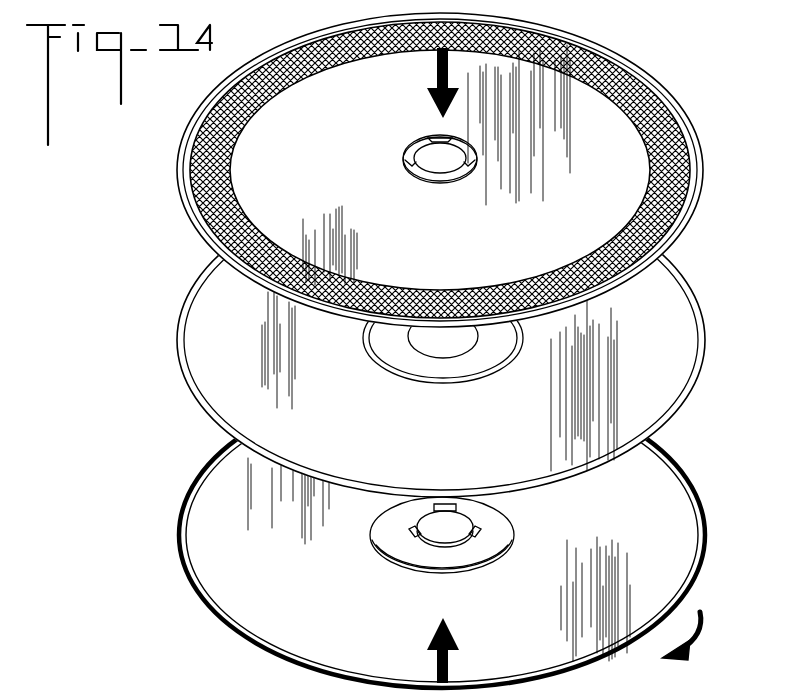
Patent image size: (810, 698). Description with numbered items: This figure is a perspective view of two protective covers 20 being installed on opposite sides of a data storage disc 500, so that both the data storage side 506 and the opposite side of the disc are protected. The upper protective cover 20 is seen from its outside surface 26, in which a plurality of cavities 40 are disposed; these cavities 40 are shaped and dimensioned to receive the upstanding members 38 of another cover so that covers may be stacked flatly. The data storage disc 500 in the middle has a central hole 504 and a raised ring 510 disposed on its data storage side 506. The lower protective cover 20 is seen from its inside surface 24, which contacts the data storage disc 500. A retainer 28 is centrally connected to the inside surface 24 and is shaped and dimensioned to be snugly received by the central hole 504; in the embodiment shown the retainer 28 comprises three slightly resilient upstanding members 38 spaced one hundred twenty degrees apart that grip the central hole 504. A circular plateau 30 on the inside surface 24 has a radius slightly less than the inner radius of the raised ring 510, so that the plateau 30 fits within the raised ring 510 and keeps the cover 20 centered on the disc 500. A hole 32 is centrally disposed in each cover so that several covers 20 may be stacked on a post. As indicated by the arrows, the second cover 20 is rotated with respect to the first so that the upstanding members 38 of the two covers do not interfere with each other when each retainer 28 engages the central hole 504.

The protective cover 20 is at (672, 76).
The outside surface 26 is at (458, 229).
The cavities 40 is at (472, 172).
The data storage disc 500 is at (705, 296).
The data storage side 506 is at (472, 441).
The raised ring 510 is at (377, 362).
The central hole 504 is at (450, 342).
The circular plateau 30 is at (388, 535).
The upstanding members 38 is at (396, 558).
The hole 32 is at (442, 530).
The retainer 28 is at (480, 540).
The inside surface 24 is at (461, 604).